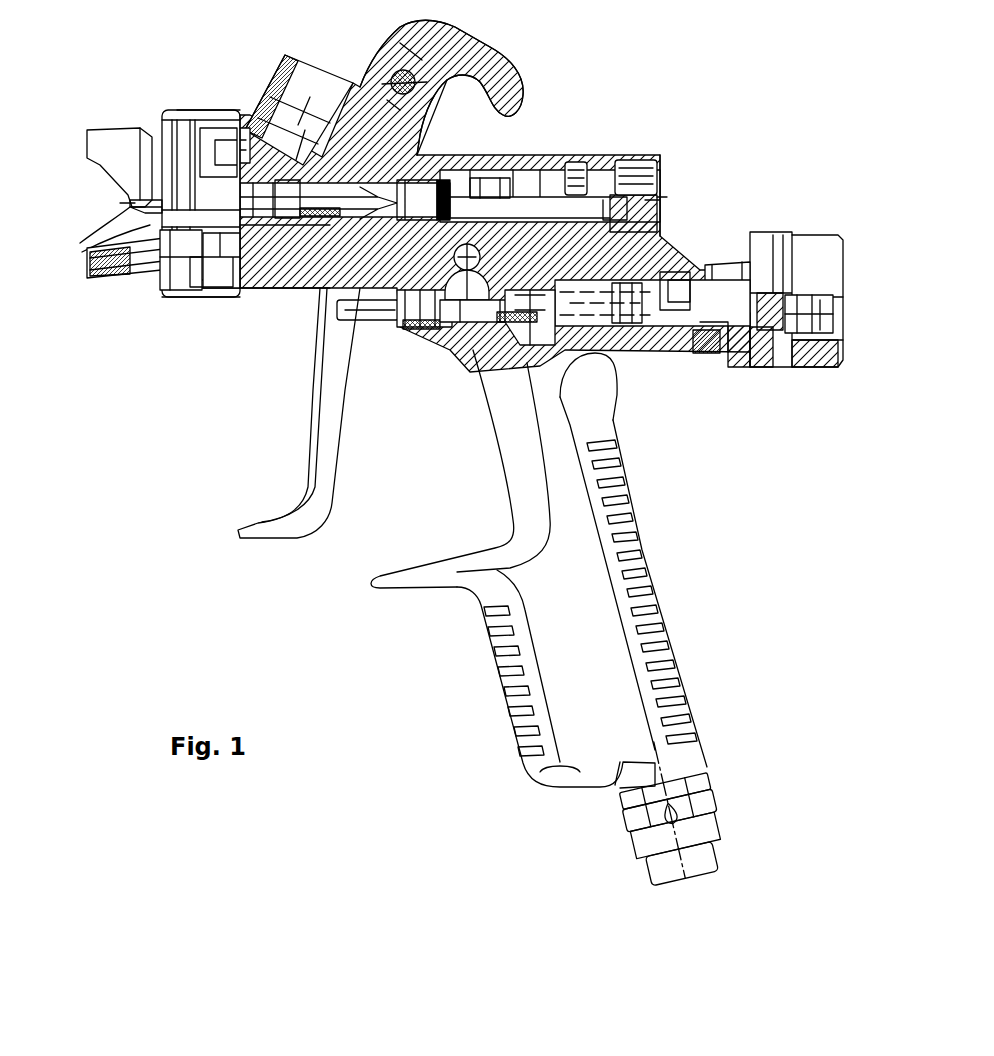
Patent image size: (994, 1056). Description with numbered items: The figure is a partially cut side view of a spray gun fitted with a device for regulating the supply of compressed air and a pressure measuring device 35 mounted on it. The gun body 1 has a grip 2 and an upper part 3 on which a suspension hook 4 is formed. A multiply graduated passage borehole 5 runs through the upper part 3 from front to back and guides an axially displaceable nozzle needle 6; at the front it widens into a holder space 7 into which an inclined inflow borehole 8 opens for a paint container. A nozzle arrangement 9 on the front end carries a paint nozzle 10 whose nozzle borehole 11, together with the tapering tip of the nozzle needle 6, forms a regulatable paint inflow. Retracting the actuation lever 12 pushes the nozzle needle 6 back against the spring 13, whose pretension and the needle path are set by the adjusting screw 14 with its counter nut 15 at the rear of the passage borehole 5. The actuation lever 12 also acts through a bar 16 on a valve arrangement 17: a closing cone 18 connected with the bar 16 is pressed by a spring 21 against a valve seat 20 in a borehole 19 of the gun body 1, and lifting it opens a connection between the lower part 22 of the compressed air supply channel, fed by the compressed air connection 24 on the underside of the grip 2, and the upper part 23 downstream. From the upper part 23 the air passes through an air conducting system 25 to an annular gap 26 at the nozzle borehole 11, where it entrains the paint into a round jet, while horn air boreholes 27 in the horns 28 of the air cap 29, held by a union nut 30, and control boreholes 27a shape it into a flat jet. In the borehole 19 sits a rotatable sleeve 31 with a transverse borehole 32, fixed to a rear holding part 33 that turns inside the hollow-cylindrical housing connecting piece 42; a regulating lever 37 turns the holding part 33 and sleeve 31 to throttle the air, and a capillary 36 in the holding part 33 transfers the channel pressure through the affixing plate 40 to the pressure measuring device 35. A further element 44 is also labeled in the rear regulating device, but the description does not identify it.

The gun body 1 is at (640, 395).
The grip 2 is at (660, 615).
The upper part 3 is at (312, 297).
The suspension hook 4 is at (505, 57).
The passage borehole 5 is at (466, 180).
The nozzle needle 6 is at (263, 140).
The holder space 7 is at (272, 228).
The inflow borehole 8 is at (335, 72).
The nozzle arrangement 9 is at (154, 297).
The paint nozzle 10 is at (148, 255).
The nozzle borehole 11 is at (130, 202).
The actuation lever 12 is at (308, 432).
The spring 13 is at (524, 156).
The adjusting screw 14 is at (640, 163).
The counter nut 15 is at (578, 165).
The bar 16 is at (373, 320).
The valve arrangement 17 is at (560, 255).
The closing cone 18 is at (441, 340).
The borehole 19 is at (525, 337).
The valve seat 20 is at (505, 335).
The spring 21 is at (560, 312).
The lower part of compressed air supply channel 22 is at (550, 352).
The upper part of compressed air supply channel 23 is at (365, 300).
The compressed air connection 24 is at (700, 803).
The air conducting system 25 is at (208, 270).
The annular gap 26 is at (128, 224).
The horn air boreholes 27 is at (108, 272).
The control boreholes 27a is at (115, 265).
The horns 28 is at (105, 132).
The air cap 29 is at (162, 145).
The union nut 30 is at (205, 118).
The sleeve 31 is at (632, 278).
The transverse borehole 32 is at (541, 349).
The holding part 33 is at (711, 325).
The pressure measuring device 35 is at (790, 230).
The capillary 36 is at (678, 303).
The regulating lever 37 is at (742, 265).
The affixing plate 40 is at (738, 342).
The housing connecting piece 42 is at (683, 338).
The regulating knob 44 is at (750, 298).